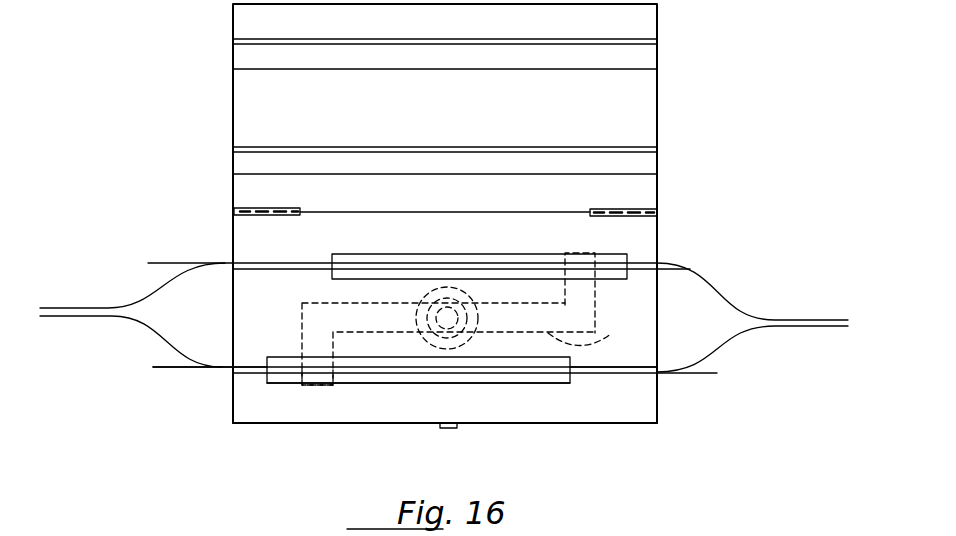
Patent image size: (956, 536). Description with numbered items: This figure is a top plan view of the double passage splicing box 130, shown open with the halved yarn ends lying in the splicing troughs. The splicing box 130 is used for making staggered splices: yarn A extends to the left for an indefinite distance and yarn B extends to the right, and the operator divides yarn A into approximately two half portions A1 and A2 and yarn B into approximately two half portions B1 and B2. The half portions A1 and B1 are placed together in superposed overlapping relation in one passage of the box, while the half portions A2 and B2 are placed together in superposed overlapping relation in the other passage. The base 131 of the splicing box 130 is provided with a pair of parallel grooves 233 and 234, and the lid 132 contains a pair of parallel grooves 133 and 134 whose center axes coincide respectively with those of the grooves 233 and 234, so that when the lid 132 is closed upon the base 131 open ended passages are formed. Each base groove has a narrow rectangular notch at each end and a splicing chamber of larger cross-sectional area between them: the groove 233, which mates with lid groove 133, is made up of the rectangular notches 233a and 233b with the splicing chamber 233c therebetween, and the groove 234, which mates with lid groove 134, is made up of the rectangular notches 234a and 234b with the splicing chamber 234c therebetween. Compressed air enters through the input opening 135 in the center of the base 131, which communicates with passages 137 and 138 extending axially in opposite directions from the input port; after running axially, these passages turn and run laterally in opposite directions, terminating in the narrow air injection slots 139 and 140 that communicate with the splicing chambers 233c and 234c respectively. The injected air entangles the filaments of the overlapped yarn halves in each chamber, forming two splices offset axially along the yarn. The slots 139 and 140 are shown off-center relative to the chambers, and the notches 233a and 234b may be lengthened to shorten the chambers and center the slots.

The splicing box 130 is at (340, 427).
The base 131 is at (509, 413).
The lid 132 is at (645, 121).
The groove 133 is at (645, 172).
The groove 134 is at (645, 62).
The input opening 135 is at (447, 306).
The passage 137 is at (596, 330).
The passage 138 is at (343, 315).
The air injection slot 139 is at (570, 248).
The air injection slot 140 is at (303, 383).
The groove 233 is at (466, 255).
The rectangular notch 233a is at (250, 260).
The rectangular notch 233b is at (640, 262).
The splicing chamber 233c is at (368, 252).
The groove 234 is at (397, 382).
The rectangular notch 234a is at (250, 375).
The rectangular notch 234b is at (617, 395).
The splicing chamber 234c is at (472, 383).
The yarn A is at (78, 307).
The half portion of yarn A A1 is at (176, 278).
The half portion of yarn A A2 is at (142, 327).
The yarn B is at (800, 318).
The half portion of yarn B B1 is at (155, 263).
The half portion of yarn B B2 is at (182, 368).